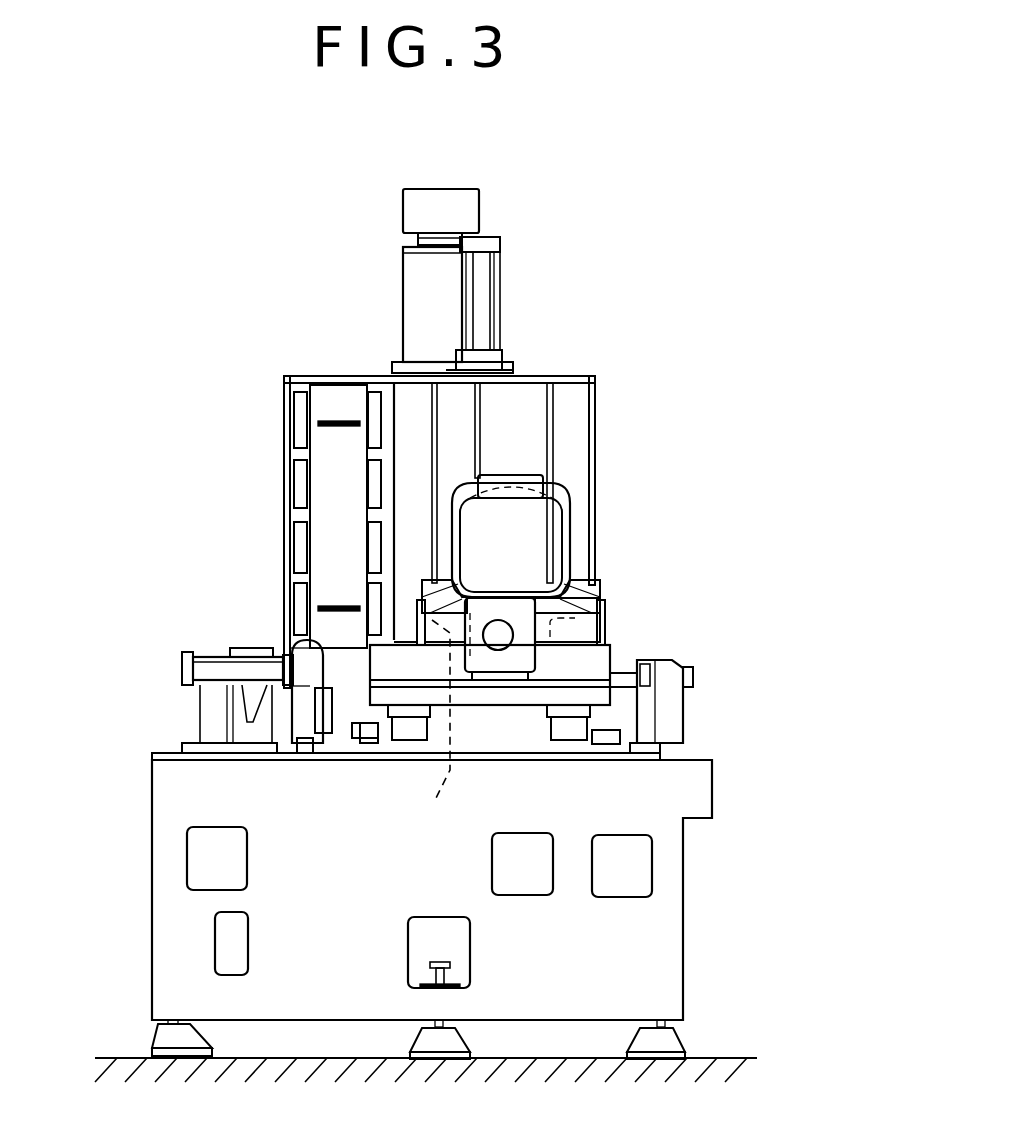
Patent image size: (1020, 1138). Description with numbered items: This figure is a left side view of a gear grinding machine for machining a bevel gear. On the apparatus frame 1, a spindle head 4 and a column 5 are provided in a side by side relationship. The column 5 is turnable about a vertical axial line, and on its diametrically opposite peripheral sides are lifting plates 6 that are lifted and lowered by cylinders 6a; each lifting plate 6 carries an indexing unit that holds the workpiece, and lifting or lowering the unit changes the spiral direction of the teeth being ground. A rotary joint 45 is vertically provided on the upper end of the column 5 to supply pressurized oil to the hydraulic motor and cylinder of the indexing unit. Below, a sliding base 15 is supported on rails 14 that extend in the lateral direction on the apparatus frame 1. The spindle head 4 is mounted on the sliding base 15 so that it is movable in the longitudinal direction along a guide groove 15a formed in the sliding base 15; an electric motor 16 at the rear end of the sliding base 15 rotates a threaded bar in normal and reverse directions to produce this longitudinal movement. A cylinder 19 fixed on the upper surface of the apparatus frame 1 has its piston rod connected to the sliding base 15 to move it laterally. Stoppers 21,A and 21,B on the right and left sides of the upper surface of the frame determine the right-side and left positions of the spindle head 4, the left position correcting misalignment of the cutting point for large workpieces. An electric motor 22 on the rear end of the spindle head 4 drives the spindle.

The apparatus frame 1 is at (702, 790).
The spindle head 4 is at (573, 577).
The column 5 is at (572, 377).
The lifting plate 6 is at (447, 510).
The cylinder 6a is at (487, 300).
The rails 14 is at (618, 678).
The sliding base 15 is at (575, 642).
The guide groove 15a is at (451, 726).
The electric motor 16 is at (498, 655).
The cylinder 19 is at (205, 667).
The stopper 21,A is at (647, 677).
The stopper 21,B is at (337, 683).
The electric motor 22 is at (540, 527).
The rotary joint 45 is at (468, 212).